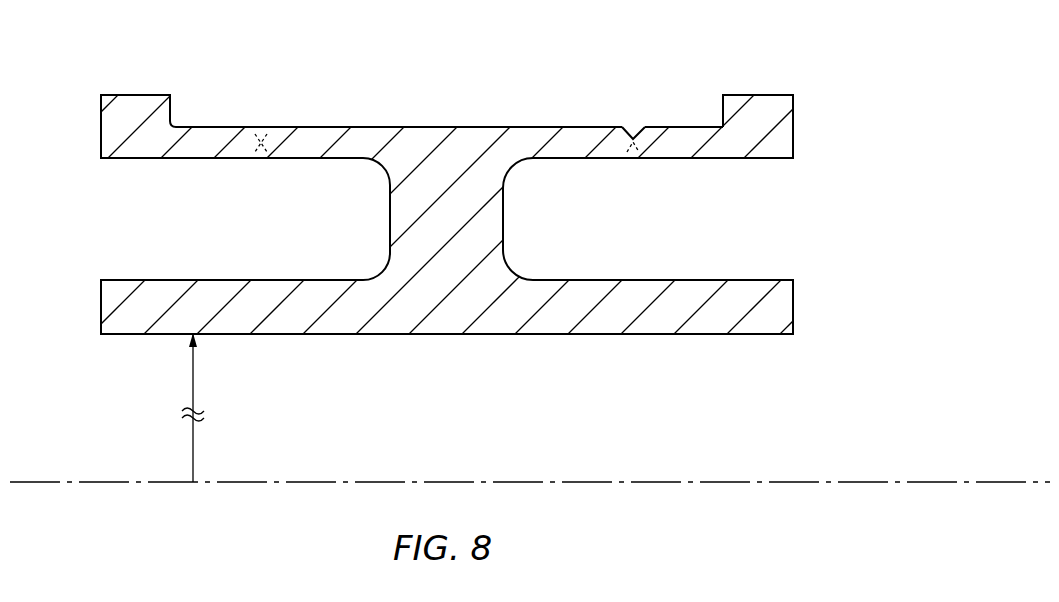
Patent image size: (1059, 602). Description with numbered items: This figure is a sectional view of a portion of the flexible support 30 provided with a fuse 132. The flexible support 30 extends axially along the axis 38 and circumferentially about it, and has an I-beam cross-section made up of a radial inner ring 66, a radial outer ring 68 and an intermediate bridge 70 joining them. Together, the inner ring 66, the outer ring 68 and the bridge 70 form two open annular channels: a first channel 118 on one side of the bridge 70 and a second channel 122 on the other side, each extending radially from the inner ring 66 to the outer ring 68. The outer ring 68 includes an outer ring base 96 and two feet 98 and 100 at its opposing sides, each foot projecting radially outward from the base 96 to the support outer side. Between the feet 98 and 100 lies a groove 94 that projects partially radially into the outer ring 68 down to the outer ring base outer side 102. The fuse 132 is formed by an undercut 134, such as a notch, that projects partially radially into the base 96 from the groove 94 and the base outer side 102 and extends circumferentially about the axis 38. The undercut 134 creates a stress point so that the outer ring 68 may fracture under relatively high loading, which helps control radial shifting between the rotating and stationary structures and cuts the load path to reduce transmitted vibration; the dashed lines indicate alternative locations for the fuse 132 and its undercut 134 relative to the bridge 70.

The flexible support 30 is at (806, 72).
The axis 38 is at (72, 482).
The radial inner ring 66 is at (800, 311).
The radial outer ring 68 is at (491, 127).
The intermediate bridge 70 is at (500, 237).
The groove 94 is at (487, 117).
The outer ring base 96 is at (693, 145).
The outer ring foot 98 is at (768, 108).
The outer ring foot 100 is at (135, 108).
The outer ring base outer side 102 is at (285, 127).
The first channel 118 is at (706, 225).
The second channel 122 is at (318, 225).
The fuse 132 is at (260, 127).
The undercut 134 is at (258, 160).